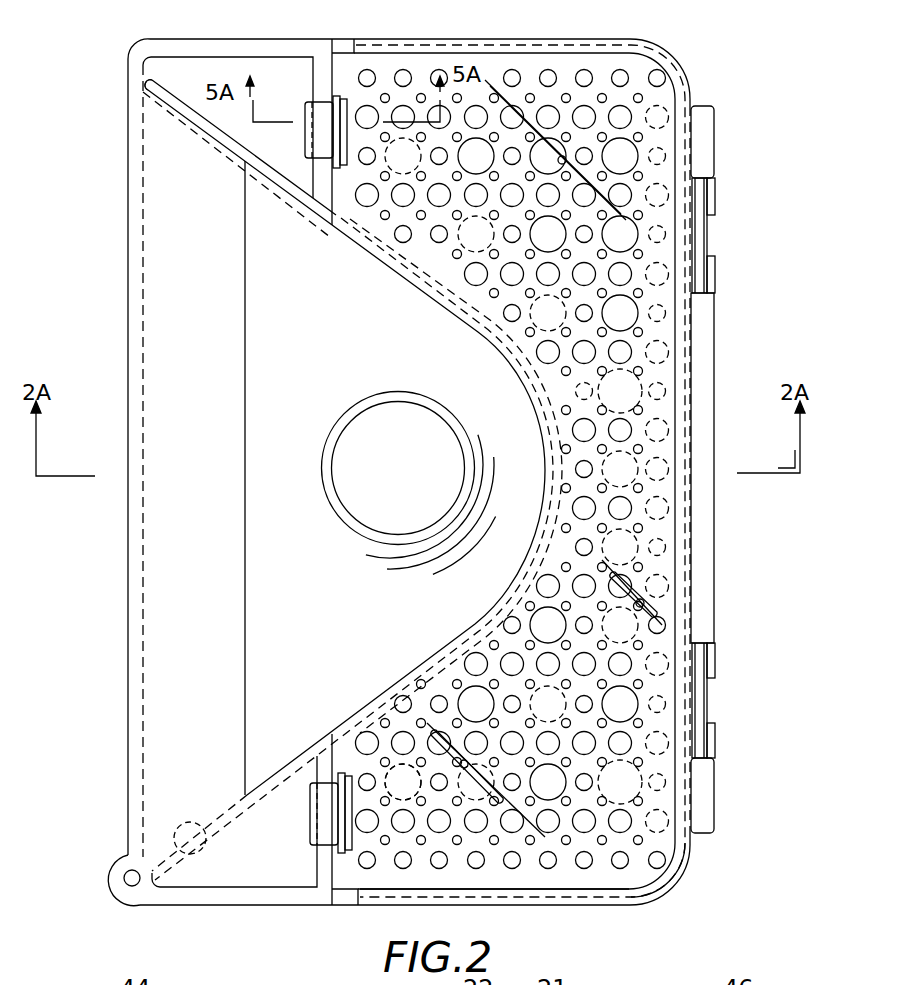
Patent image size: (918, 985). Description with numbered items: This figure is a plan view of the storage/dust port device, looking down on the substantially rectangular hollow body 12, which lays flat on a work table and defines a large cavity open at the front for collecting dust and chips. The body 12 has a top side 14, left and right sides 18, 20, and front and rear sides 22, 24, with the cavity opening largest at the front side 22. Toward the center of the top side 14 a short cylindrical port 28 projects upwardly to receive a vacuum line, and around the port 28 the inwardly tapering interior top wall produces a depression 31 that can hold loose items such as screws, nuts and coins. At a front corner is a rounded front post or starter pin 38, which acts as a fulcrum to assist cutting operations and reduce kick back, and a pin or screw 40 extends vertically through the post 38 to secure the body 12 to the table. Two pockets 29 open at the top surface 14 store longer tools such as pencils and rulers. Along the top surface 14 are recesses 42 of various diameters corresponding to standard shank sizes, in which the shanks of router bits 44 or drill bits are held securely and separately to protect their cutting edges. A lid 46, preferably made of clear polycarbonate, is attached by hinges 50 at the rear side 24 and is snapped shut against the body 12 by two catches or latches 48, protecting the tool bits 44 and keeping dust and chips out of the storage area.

The body 12 is at (182, 46).
The top side 14 is at (302, 92).
The left side 18 is at (536, 41).
The right side 20 is at (580, 906).
The front side 22 is at (130, 297).
The rear side 24 is at (716, 378).
The port 28 is at (347, 413).
The pockets 29 is at (150, 79).
The depression 31 is at (442, 618).
The front post 38 is at (112, 870).
The pin or screw 40 is at (124, 890).
The recesses 42 is at (635, 540).
The router bits 44 is at (630, 383).
The lid 46 is at (660, 875).
The latches 48 is at (313, 827).
The hinges 50 is at (702, 240).